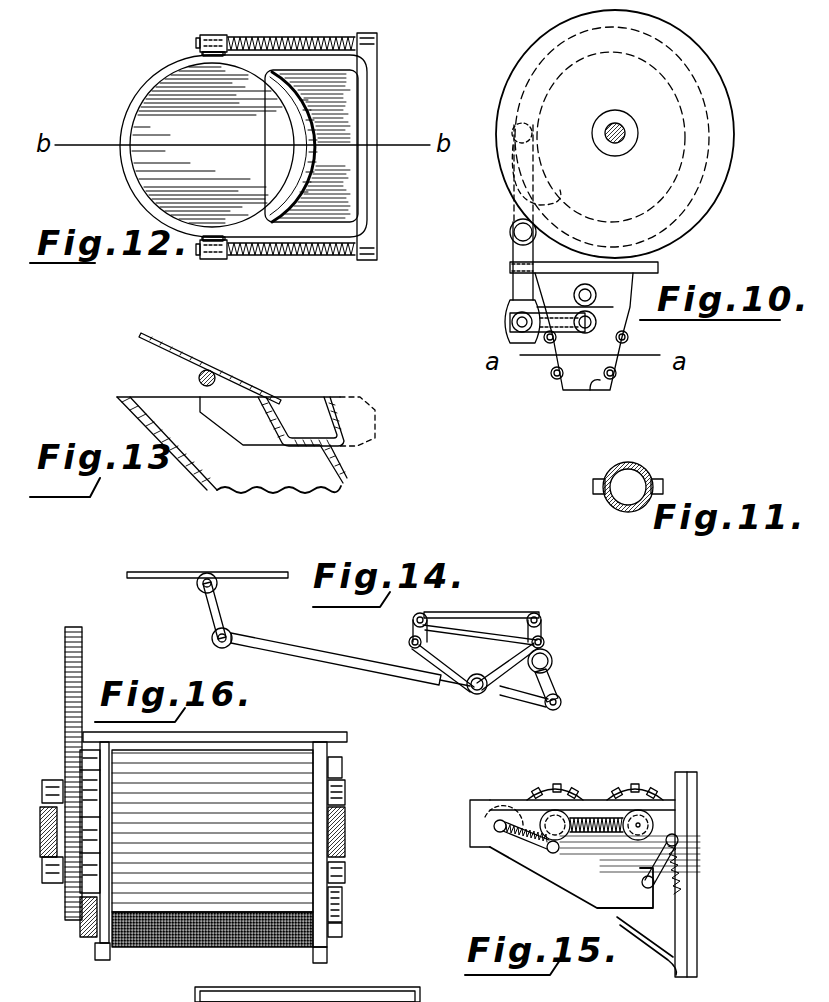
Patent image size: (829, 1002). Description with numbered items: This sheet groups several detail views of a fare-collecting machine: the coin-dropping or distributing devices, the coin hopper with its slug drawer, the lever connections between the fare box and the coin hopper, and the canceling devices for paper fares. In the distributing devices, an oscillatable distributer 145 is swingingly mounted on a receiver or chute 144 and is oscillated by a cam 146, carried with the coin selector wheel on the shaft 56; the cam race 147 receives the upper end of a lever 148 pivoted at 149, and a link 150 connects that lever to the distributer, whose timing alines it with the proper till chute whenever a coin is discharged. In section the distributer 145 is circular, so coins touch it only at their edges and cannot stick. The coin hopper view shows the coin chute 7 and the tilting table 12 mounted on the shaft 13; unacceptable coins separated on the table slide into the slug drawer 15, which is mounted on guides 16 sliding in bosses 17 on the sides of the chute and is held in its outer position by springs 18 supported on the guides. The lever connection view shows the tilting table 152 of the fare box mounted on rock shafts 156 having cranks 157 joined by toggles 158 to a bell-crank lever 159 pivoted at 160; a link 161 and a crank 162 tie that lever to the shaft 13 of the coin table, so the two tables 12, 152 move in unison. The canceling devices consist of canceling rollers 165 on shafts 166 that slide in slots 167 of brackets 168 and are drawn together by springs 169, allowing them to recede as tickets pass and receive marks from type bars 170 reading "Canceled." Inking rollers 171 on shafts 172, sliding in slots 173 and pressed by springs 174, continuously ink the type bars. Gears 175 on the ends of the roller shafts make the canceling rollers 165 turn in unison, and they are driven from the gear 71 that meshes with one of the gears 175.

In FIG. 12, the coin chute 7 is at (230, 102).
In FIG. 13, the coin chute 7 is at (232, 445).
In FIG. 13, the tilting table 12 is at (240, 378).
In FIG. 14, the tilting table 12 is at (253, 537).
In FIG. 13, the shaft 13 is at (199, 381).
In FIG. 14, the shaft 13 is at (200, 593).
In FIG. 12, the slug drawer 15 is at (311, 146).
In FIG. 13, the slug drawer 15 is at (309, 410).
In FIG. 12, the guides 16 is at (196, 260).
In FIG. 12, the bosses 17 is at (212, 260).
In FIG. 12, the springs 18 is at (303, 257).
In FIG. 10, the shaft 56 is at (615, 143).
In FIG. 16, the gear 71 is at (73, 697).
In FIG. 10, the receiver or chute 144 is at (613, 287).
In FIG. 10, the oscillatable distributer 145 is at (597, 397).
In FIG. 11, the oscillatable distributer 145 is at (673, 451).
In FIG. 10, the cam 146 is at (710, 87).
In FIG. 10, the cam race 147 is at (707, 153).
In FIG. 10, the lever 148 is at (512, 213).
In FIG. 10, the pivot 149 is at (518, 237).
In FIG. 10, the link 150 is at (555, 320).
In FIG. 14, the tilting table 152 is at (540, 616).
In FIG. 14, the rock shafts 156 is at (532, 612).
In FIG. 14, the cranks 157 is at (530, 630).
In FIG. 14, the toggles 158 is at (520, 657).
In FIG. 14, the bell-crank lever 159 is at (503, 672).
In FIG. 14, the pivot 160 is at (552, 664).
In FIG. 14, the link 161 is at (382, 672).
In FIG. 14, the crank 162 is at (224, 608).
In FIG. 16, the canceling rollers 165 is at (293, 768).
In FIG. 15, the canceling rollers 165 is at (670, 783).
In FIG. 16, the shafts 166 is at (347, 874).
In FIG. 15, the shafts 166 is at (637, 838).
In FIG. 15, the slots 167 is at (550, 812).
In FIG. 16, the brackets 168 is at (347, 817).
In FIG. 15, the brackets 168 is at (590, 807).
In FIG. 16, the springs 169 is at (347, 829).
In FIG. 15, the springs 169 is at (637, 810).
In FIG. 16, the type bars 170 is at (157, 900).
In FIG. 15, the type bars 170 is at (657, 790).
In FIG. 16, the inking rollers 171 is at (197, 930).
In FIG. 15, the inking rollers 171 is at (483, 830).
In FIG. 16, the shafts 172 is at (343, 930).
In FIG. 15, the shafts 172 is at (498, 836).
In FIG. 15, the slots 173 is at (480, 828).
In FIG. 16, the springs 174 is at (343, 902).
In FIG. 15, the springs 174 is at (527, 843).
In FIG. 16, the gears 175 is at (75, 920).